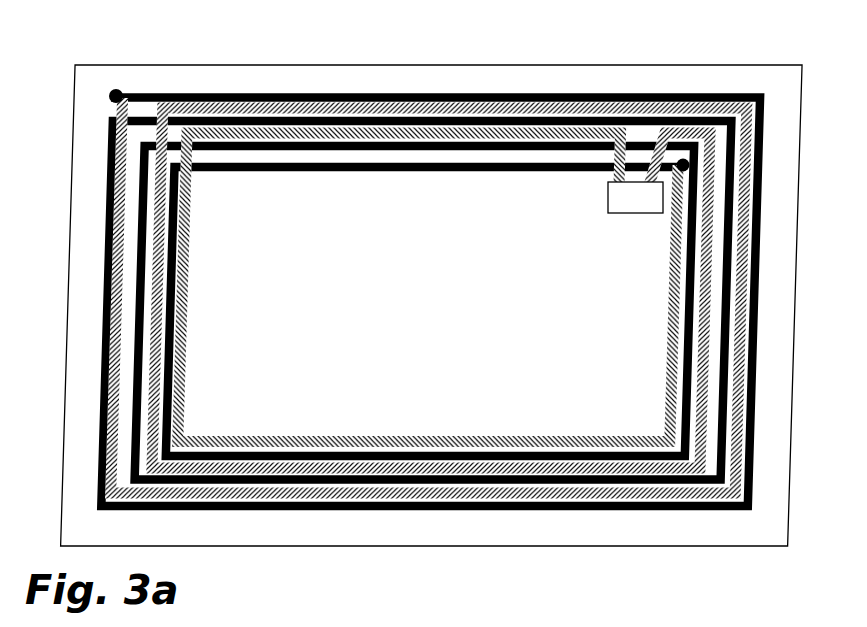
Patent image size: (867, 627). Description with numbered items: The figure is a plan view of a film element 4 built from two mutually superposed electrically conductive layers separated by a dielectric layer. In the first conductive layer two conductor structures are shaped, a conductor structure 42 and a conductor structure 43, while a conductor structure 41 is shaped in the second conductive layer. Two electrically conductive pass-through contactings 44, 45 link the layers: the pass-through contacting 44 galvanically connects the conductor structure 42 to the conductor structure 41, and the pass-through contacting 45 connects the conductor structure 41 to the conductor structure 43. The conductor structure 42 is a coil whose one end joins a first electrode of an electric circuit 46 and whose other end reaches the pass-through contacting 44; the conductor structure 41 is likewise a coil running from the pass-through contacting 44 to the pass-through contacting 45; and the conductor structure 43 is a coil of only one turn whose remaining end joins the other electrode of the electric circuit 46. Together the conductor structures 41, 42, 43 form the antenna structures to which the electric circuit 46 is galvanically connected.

The film element 4 is at (501, 57).
The conductor structure 41 is at (163, 95).
The conductor structure 42 is at (220, 497).
The conductor structure 43 is at (314, 440).
The pass-through contacting 44 is at (108, 97).
The pass-through contacting 45 is at (690, 172).
The electric circuit 46 is at (621, 207).